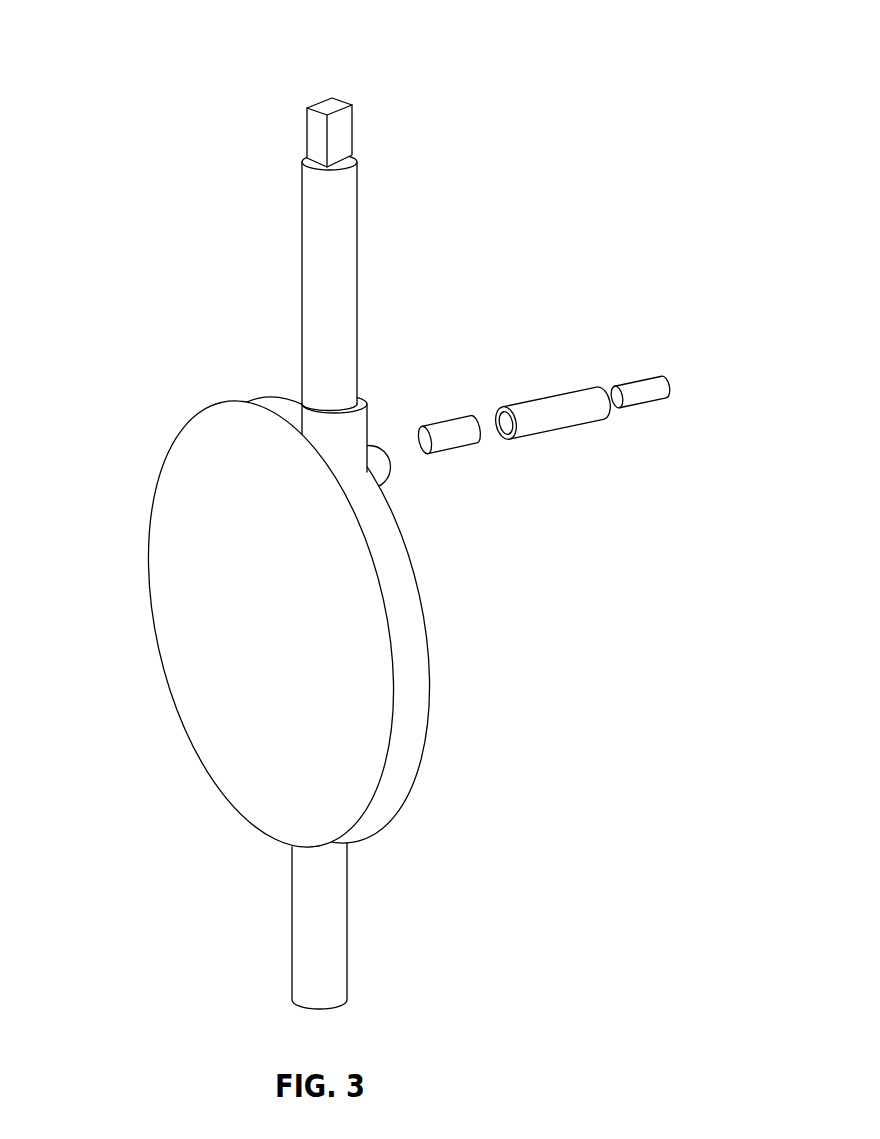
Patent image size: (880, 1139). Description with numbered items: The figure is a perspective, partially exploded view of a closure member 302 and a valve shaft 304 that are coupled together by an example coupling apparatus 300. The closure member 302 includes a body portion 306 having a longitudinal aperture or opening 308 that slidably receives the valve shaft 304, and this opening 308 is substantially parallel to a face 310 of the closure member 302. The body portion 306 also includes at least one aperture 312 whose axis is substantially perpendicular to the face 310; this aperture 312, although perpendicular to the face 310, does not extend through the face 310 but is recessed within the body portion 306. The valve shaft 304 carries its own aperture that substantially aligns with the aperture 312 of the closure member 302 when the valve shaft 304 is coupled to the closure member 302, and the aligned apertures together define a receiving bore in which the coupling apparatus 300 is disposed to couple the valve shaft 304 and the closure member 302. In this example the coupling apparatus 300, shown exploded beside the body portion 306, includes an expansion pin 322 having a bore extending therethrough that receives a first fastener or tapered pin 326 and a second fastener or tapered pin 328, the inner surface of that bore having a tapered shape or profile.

The coupling apparatus 300 is at (470, 58).
The closure member 302 is at (160, 473).
The valve shaft 304 is at (357, 233).
The body portion 306 is at (357, 426).
The opening 308 is at (322, 410).
The face 310 is at (193, 623).
The aperture 312 is at (390, 470).
The expansion pin 322 is at (557, 432).
The first tapered pin 326 is at (462, 421).
The second tapered pin 328 is at (641, 380).